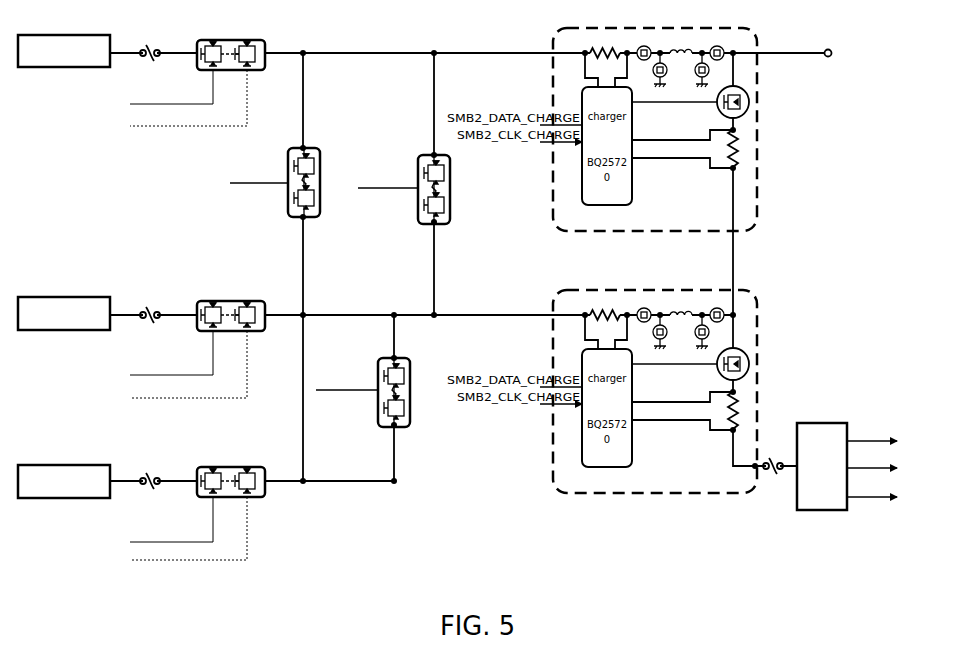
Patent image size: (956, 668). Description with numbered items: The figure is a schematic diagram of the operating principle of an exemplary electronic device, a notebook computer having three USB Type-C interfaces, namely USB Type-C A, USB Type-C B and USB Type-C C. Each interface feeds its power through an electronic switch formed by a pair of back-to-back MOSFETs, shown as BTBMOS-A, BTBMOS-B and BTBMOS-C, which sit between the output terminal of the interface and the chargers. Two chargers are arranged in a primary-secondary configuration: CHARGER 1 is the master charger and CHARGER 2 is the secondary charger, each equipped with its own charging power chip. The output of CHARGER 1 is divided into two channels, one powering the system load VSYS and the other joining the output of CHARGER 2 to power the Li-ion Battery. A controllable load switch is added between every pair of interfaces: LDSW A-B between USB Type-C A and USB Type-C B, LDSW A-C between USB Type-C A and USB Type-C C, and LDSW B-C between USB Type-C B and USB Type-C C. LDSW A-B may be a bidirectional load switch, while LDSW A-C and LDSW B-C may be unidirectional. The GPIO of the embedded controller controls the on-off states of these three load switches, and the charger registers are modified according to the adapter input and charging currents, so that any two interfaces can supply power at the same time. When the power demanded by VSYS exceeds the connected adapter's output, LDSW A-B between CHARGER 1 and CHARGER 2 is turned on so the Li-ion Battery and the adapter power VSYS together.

The CHARGER1 1 is at (602, 129).
The CHARGER2 2 is at (602, 391).
The USB Type-C A interface USB Type-C A is at (64, 51).
The USB Type-C B interface USB Type-C B is at (64, 313).
The USB Type-C C interface USB Type-C C is at (64, 481).
The electronic switch BTBMOS-A is at (232, 46).
The electronic switch BTBMOS-B is at (232, 306).
The electronic switch BTBMOS-C is at (232, 471).
The controllable load switch LDSW A-C is at (271, 182).
The controllable load switch LDSW A-B is at (402, 189).
The controllable load switch LDSW B-C is at (363, 392).
The system load VSYS is at (800, 53).
The batteries Li-ion Battery is at (822, 466).